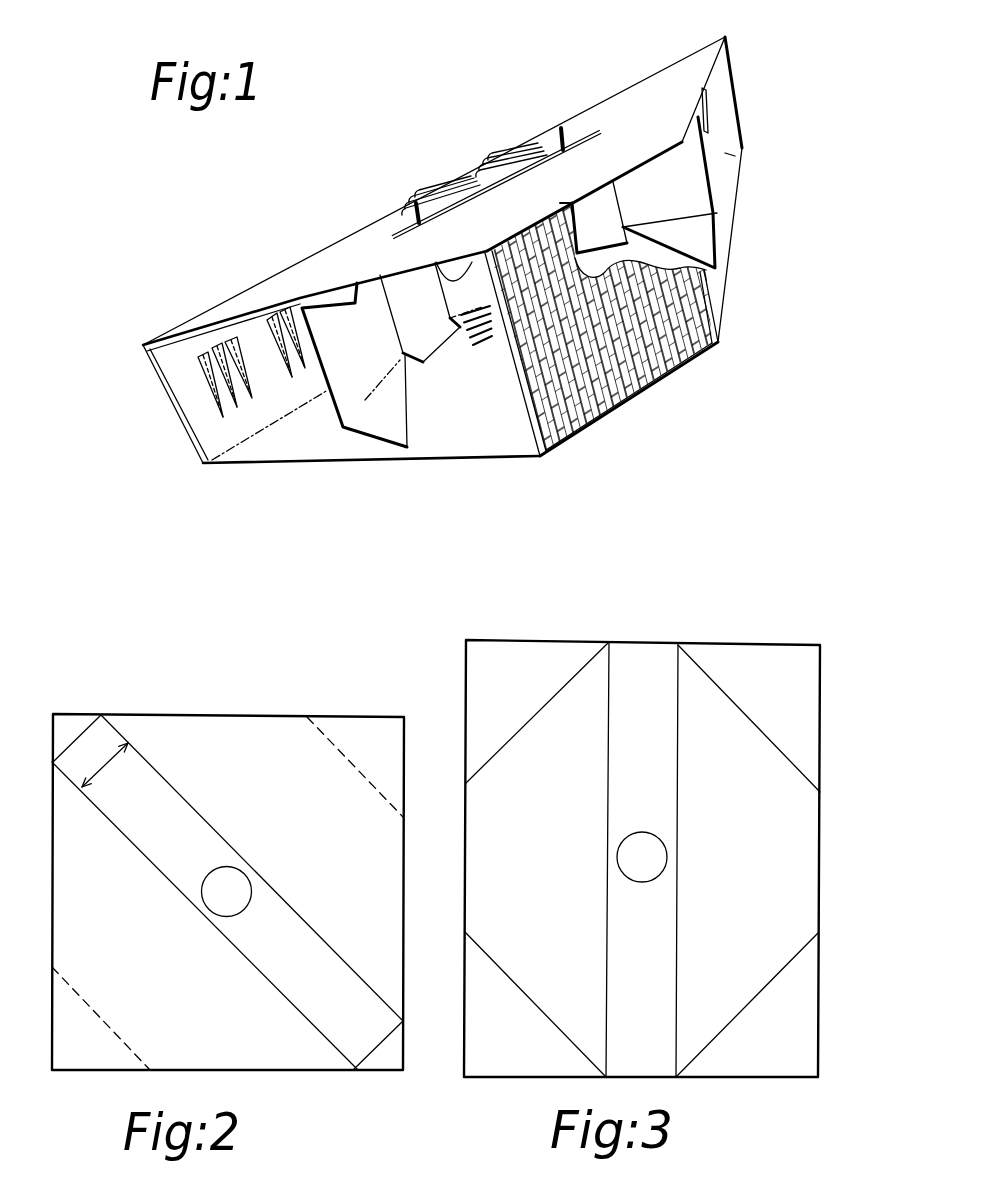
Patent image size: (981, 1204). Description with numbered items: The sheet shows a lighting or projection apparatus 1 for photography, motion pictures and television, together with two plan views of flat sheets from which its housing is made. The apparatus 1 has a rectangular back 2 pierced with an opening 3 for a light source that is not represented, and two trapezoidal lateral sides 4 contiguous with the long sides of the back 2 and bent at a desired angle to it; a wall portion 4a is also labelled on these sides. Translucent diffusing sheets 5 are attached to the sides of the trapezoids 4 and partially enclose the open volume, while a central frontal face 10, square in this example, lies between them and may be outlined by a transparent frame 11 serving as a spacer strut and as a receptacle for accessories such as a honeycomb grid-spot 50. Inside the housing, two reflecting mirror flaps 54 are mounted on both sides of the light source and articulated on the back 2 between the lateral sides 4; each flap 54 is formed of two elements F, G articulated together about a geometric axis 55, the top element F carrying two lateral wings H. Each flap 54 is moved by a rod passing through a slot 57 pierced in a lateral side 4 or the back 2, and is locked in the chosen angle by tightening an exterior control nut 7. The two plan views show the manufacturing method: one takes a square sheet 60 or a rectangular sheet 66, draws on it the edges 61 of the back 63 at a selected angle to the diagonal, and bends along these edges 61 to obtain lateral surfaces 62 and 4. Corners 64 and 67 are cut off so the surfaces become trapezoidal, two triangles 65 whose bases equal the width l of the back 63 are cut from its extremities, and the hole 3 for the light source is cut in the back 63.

In FIG. 1, the lighting apparatus 1 is at (443, 168).
In FIG. 1, the back 2 is at (193, 405).
In FIG. 1, the opening 3 is at (459, 270).
In FIG. 2, the opening 3 is at (240, 880).
In FIG. 3, the opening 3 is at (657, 853).
In FIG. 1, the lateral side 4 is at (653, 96).
In FIG. 3, the lateral side 4 is at (568, 799).
In FIG. 1, the wall portion 4a is at (720, 160).
In FIG. 1, the translucent sheet 5 is at (742, 102).
In FIG. 1, the exterior control nut 7 is at (417, 207).
In FIG. 1, the central face 10 is at (601, 428).
In FIG. 1, the transparent frame 11 is at (527, 432).
In FIG. 1, the grid-spot 50 is at (652, 362).
In FIG. 1, the interior reflecting flap 54 is at (718, 262).
In FIG. 1, the geometric axis 55 is at (623, 227).
In FIG. 1, the slot 57 is at (488, 186).
In FIG. 1, the top element F is at (673, 195).
In FIG. 1, the flap element G is at (398, 290).
In FIG. 1, the lateral wing H is at (695, 233).
In FIG. 2, the square sheet 60 is at (208, 745).
In FIG. 2, the edge 61 is at (143, 855).
In FIG. 3, the edge 61 is at (679, 745).
In FIG. 2, the lateral surface 62 is at (265, 735).
In FIG. 2, the back 63 is at (320, 1012).
In FIG. 3, the back 63 is at (645, 680).
In FIG. 2, the corner 64 is at (358, 733).
In FIG. 2, the triangle 65 is at (68, 720).
In FIG. 3, the rectangular sheet 66 is at (707, 637).
In FIG. 3, the corner 67 is at (531, 661).
In FIG. 2, the width l is at (105, 769).